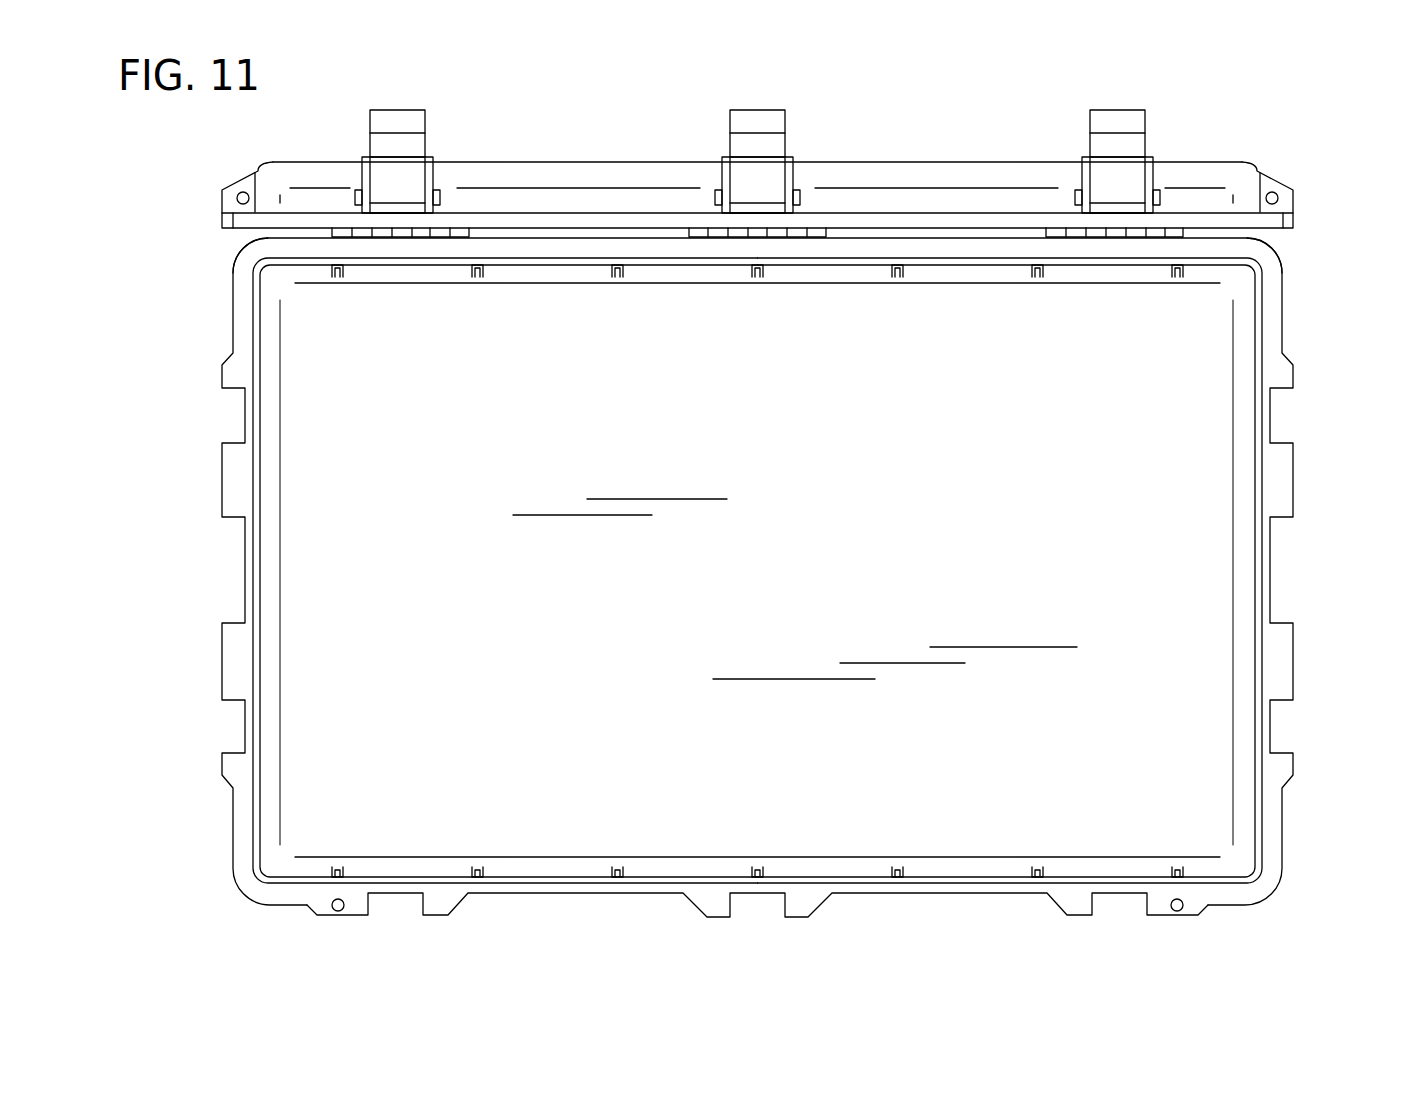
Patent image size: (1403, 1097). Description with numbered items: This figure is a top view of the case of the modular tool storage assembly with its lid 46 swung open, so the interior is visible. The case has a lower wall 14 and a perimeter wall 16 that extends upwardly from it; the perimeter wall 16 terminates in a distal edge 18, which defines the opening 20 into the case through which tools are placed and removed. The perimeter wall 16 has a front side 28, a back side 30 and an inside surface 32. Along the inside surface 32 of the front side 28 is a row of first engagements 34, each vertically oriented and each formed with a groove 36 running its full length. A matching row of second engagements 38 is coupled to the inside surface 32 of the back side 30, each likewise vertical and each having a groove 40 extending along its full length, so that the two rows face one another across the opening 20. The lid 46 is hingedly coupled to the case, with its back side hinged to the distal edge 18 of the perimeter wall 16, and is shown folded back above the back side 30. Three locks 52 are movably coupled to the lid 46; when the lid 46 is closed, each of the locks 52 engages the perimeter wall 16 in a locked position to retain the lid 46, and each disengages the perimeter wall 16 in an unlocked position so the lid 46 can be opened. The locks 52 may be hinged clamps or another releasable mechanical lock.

The lower wall 14 is at (1205, 380).
The perimeter wall 16 is at (1262, 570).
The distal edge 18 is at (260, 572).
The opening 20 is at (385, 491).
The front side 28 is at (978, 895).
The back side 30 is at (932, 233).
The inside surface 32 is at (1255, 322).
The first engagements 34 is at (607, 873).
The groove 36 is at (618, 852).
The second engagements 38 is at (612, 268).
The groove 40 is at (618, 290).
The lid 46 is at (672, 162).
The locks 52 is at (397, 110).